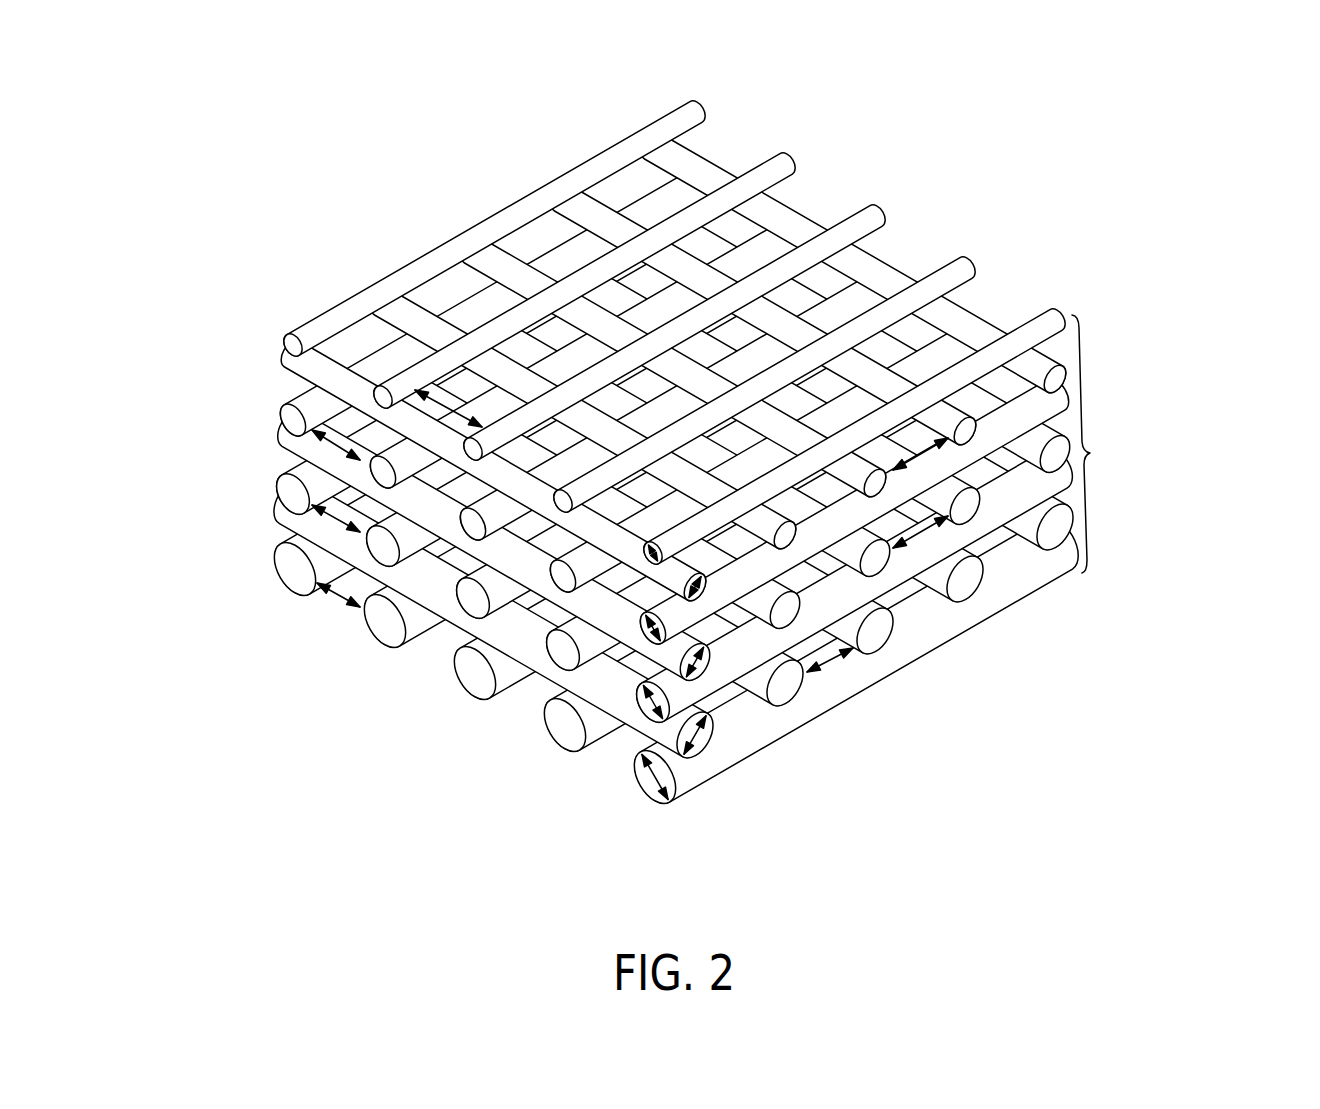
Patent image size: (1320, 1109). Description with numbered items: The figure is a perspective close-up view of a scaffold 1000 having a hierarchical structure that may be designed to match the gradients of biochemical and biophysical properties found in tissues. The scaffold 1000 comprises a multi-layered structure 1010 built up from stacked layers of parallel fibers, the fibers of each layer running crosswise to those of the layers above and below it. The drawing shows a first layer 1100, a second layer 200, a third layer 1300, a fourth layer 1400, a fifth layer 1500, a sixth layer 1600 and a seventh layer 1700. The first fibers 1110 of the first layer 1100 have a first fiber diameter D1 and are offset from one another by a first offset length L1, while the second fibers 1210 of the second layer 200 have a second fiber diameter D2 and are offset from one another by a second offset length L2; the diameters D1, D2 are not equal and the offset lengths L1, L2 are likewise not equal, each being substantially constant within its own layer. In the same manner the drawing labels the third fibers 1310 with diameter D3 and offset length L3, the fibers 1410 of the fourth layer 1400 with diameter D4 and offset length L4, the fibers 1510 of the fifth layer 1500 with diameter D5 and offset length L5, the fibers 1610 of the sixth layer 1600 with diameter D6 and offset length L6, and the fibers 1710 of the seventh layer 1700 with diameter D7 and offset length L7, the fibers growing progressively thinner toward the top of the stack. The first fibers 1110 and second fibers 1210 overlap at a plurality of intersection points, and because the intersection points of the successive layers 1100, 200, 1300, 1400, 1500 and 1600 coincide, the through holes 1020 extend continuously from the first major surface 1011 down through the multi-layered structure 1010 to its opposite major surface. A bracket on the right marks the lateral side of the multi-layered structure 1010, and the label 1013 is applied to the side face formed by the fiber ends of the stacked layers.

The scaffold 1000 is at (701, 446).
The multi-layered structure 1010 is at (792, 570).
The first major surface 1011 is at (767, 171).
The side surface 1013 is at (1090, 453).
The through holes 1020 is at (647, 212).
The first layer 1100 is at (606, 560).
The first fibers 1110 is at (898, 657).
The second layer 200 is at (613, 533).
The second fibers 1210 is at (558, 690).
The third layer 1300 is at (621, 484).
The third fibers 1310 is at (905, 565).
The fourth layer 1400 is at (618, 485).
The rod of fourth layer 1410 is at (370, 605).
The fifth layer 1500 is at (668, 410).
The rod of fifth layer 1510 is at (975, 450).
The sixth layer 1600 is at (631, 368).
The rod of sixth layer 1610 is at (330, 374).
The seventh layer 1700 is at (673, 316).
The rod of seventh layer 1710 is at (383, 297).
The first fiber diameter D1 is at (648, 785).
The second fiber diameter D2 is at (707, 733).
The diameter of third layer rod D3 is at (640, 705).
The diameter of fourth layer rod D4 is at (708, 665).
The diameter of fifth layer rod D5 is at (645, 635).
The diameter of sixth layer rod D6 is at (707, 593).
The diameter of seventh layer rod D7 is at (648, 556).
The first offset length L1 is at (335, 597).
The second offset length L2 is at (830, 665).
The spacing of third layer rods L3 is at (330, 513).
The spacing of fourth layer rods L4 is at (950, 522).
The spacing of fifth layer rods L5 is at (345, 430).
The spacing of sixth layer rods L6 is at (923, 445).
The spacing of seventh layer rods L7 is at (480, 412).